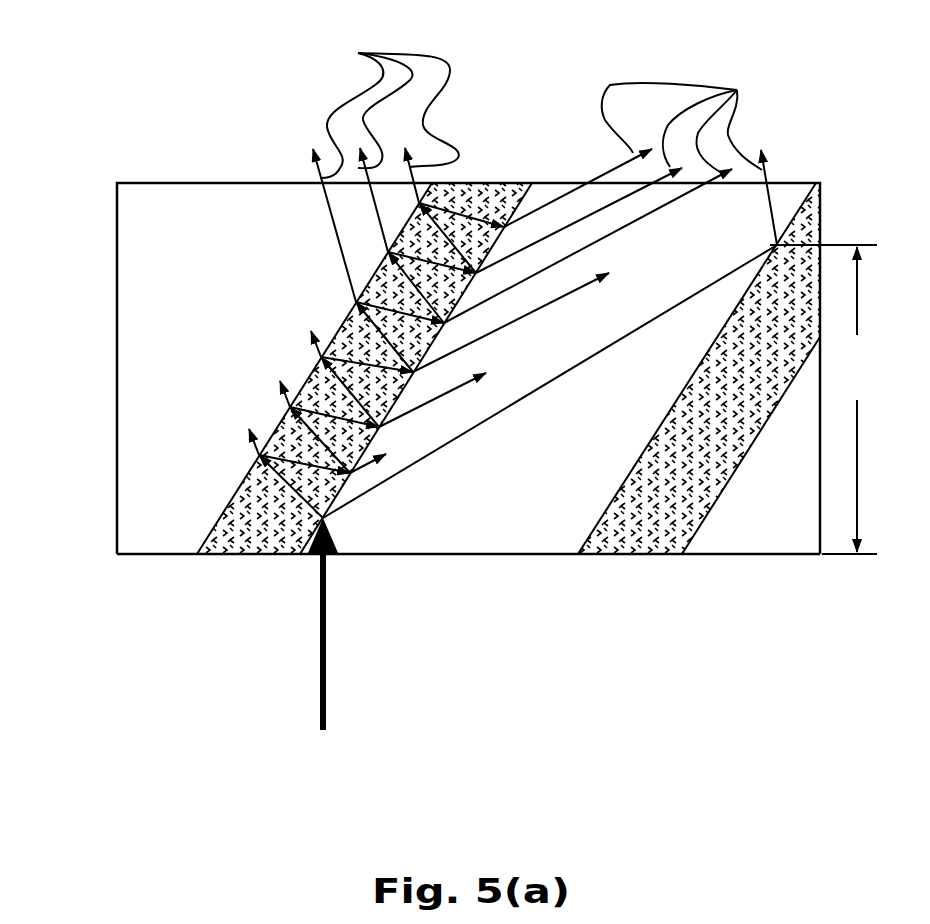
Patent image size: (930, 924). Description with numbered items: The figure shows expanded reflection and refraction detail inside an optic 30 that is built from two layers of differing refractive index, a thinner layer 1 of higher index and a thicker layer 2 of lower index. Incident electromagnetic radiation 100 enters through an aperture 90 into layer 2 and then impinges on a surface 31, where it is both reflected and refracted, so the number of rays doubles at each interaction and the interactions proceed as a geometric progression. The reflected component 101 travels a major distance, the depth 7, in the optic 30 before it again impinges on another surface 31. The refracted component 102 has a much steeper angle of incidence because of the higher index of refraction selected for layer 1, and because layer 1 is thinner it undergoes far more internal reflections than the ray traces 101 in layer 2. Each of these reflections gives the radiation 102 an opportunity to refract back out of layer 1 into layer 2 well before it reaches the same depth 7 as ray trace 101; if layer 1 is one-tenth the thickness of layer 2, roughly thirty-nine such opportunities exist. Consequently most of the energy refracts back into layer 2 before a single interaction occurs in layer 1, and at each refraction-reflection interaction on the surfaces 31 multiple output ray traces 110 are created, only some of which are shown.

The layer 1 is at (233, 554).
The layer 2 is at (172, 540).
The depth 7 is at (823, 399).
The optic 30 is at (96, 255).
The surface 31 is at (296, 537).
The aperture 90 is at (445, 554).
The incident electromagnetic radiation 100 is at (320, 690).
The reflected component 101 is at (420, 458).
The refracted component 102 is at (365, 316).
The output ray traces 110 is at (550, 107).